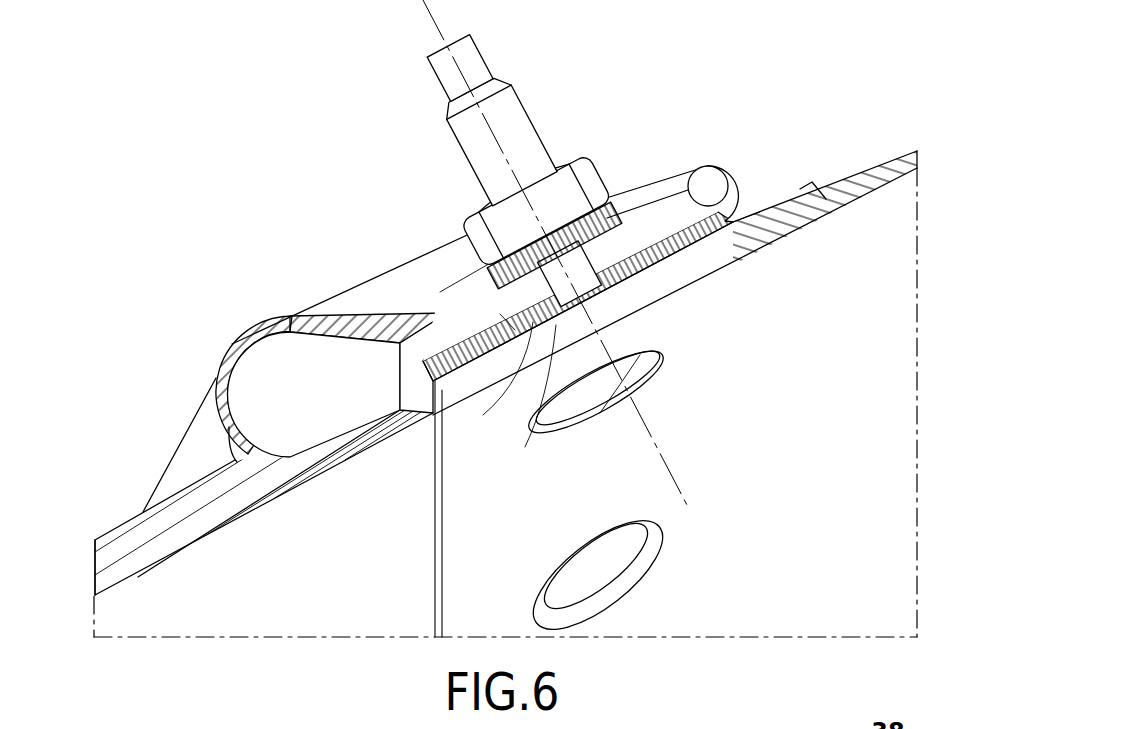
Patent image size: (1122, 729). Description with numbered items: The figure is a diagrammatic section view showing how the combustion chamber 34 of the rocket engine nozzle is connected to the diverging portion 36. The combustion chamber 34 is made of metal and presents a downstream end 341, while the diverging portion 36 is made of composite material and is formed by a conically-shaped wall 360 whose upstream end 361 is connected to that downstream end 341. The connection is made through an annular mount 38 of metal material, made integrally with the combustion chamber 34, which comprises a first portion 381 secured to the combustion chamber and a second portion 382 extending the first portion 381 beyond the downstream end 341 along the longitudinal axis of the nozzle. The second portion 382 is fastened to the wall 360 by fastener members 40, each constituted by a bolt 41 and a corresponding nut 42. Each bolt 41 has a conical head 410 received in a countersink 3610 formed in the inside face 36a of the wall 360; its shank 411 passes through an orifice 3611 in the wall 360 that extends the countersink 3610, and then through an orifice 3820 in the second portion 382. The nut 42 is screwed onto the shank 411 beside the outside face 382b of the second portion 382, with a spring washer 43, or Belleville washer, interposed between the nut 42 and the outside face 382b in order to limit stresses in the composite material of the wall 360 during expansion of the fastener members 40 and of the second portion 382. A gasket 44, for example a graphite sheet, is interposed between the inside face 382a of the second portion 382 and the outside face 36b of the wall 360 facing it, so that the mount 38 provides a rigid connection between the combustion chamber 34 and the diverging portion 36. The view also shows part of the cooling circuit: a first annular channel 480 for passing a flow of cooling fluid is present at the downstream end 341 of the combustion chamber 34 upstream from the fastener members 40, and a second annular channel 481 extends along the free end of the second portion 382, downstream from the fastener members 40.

The combustion chamber 34 is at (238, 465).
The downstream end of the combustion chamber 341 is at (125, 550).
The diverging portion 36 is at (675, 359).
The inside face of the wall 36a is at (790, 233).
The outside face of the wall 36b is at (797, 191).
The wall 360 is at (783, 217).
The upstream end of the diverging portion 361 is at (697, 268).
The countersink 3610 is at (517, 372).
The orifice 3611 is at (492, 365).
The annular mount 38 is at (454, 285).
The first portion of the annular mount 381 is at (195, 440).
The second portion of the annular mount 382 is at (584, 231).
The inside face of the second portion 382a is at (708, 186).
The outside face of the second portion 382b is at (380, 280).
The orifice 3820 is at (497, 320).
The fastener member 40 is at (542, 252).
The bolt 41 is at (460, 68).
The shank 411 is at (498, 139).
The nut 42 is at (534, 208).
The spring washer 43 is at (554, 245).
The gasket 44 is at (722, 230).
The conical head 410 is at (569, 274).
The first annular channel 480 is at (266, 348).
The second annular channel 481 is at (727, 162).